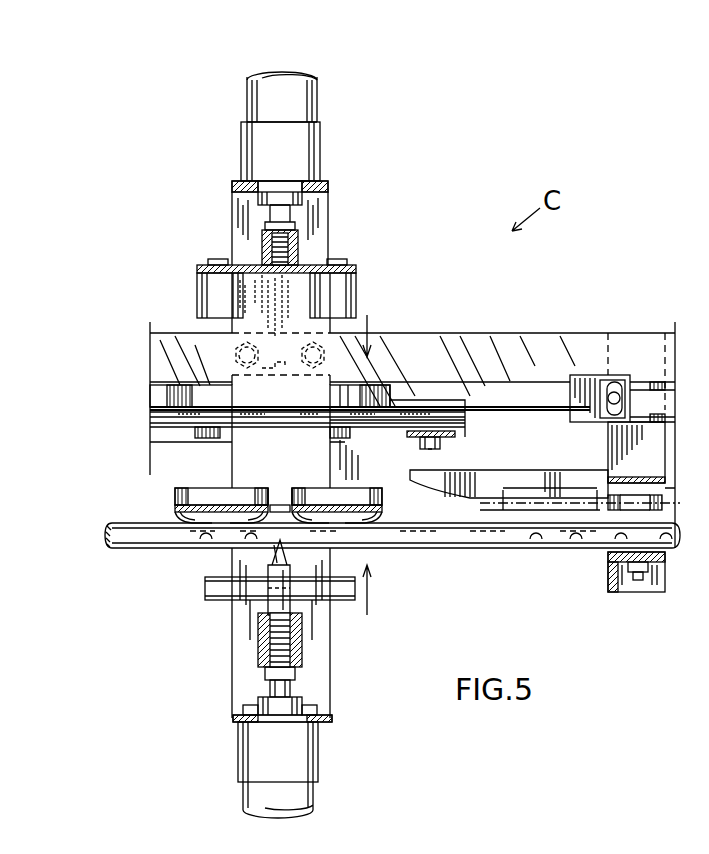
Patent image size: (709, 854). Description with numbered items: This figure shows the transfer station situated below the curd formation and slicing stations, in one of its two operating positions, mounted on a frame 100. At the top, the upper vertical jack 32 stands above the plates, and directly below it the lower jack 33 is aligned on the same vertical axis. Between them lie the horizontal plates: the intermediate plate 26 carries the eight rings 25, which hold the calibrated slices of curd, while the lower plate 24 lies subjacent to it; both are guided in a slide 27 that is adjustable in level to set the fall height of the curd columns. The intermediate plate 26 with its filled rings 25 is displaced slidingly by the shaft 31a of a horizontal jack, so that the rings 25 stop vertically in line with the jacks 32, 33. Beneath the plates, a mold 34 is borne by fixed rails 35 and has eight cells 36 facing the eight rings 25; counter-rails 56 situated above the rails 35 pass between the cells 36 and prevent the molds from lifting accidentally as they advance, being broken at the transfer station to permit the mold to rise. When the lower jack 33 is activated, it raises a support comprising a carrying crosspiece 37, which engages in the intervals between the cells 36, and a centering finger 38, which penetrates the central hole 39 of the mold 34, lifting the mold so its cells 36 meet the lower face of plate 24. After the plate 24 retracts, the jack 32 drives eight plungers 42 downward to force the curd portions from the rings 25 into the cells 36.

The frame 100 is at (477, 335).
The vertical jack 32 is at (309, 155).
The plungers 42 is at (203, 287).
The rings 25 is at (183, 393).
The intermediate plate 26 is at (540, 412).
The slide 27 is at (455, 433).
The lower plate 24 is at (207, 440).
The shaft of jack 31a is at (652, 385).
The counter-rails 56 is at (545, 478).
The mold 34 is at (178, 500).
The cells 36 is at (358, 493).
The central hole 39 is at (281, 505).
The fixed rails 35 is at (525, 548).
The centering finger 38 is at (275, 556).
The carrying crosspiece 37 is at (208, 585).
The lower jack 33 is at (250, 744).